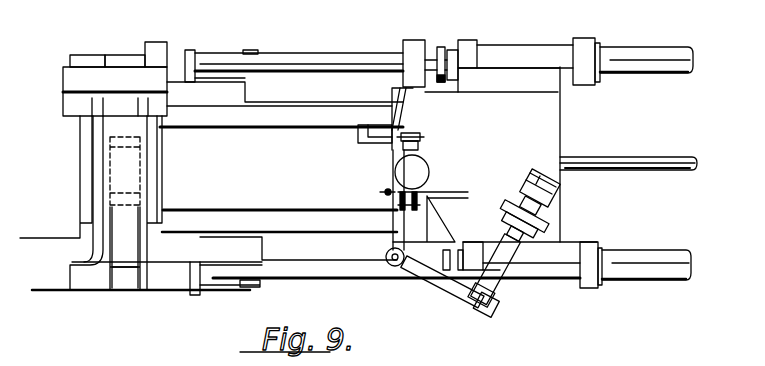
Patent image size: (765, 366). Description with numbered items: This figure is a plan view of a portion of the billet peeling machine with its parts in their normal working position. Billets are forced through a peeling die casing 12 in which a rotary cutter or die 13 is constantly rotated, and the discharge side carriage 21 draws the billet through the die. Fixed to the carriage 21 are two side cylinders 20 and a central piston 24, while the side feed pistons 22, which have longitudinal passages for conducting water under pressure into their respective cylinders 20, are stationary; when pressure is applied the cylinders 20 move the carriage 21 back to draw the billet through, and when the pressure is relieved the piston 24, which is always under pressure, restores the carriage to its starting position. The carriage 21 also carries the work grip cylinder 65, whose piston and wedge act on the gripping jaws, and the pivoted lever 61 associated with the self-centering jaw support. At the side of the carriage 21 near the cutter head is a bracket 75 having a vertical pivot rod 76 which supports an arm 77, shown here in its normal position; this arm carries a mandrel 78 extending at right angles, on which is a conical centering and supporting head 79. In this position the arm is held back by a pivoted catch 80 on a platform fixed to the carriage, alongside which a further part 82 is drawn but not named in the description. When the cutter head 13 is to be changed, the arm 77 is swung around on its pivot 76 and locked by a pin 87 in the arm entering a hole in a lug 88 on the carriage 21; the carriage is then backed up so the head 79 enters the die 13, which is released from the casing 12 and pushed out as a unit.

The peeling die casing 12 is at (127, 245).
The rotary cutter or die 13 is at (143, 185).
The cylinder 20 is at (652, 52).
The carriage 21 is at (497, 131).
The side feed piston 22 is at (525, 50).
The piston 24 is at (645, 157).
The lever 61 is at (416, 138).
The cylinder 65 is at (410, 172).
The bracket 75 is at (397, 220).
The vertical pivot rod 76 is at (395, 267).
The arm 77 is at (460, 302).
The mandrel 78 is at (494, 284).
The conical centering and supporting head 79 is at (533, 224).
The catch 80 is at (545, 178).
The valve neck 82 is at (530, 180).
The pin 87 is at (452, 288).
The lug 88 is at (385, 190).